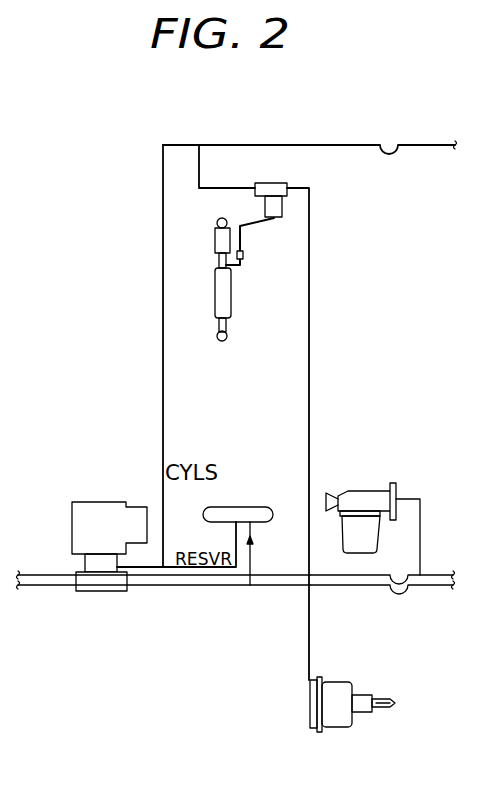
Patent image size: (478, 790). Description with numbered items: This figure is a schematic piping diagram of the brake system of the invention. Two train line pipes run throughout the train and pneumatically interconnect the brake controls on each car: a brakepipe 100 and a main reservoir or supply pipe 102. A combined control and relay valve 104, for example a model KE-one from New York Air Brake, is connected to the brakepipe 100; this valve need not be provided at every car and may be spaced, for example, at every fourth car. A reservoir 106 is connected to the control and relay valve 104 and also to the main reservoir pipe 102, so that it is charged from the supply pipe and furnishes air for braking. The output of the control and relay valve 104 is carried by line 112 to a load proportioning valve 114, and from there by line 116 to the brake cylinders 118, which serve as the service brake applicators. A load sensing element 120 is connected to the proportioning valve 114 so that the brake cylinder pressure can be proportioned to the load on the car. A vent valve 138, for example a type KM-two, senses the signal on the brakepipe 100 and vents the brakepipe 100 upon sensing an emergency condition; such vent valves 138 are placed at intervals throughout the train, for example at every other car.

The brakepipe 100 is at (435, 574).
The main reservoir or supply pipe 102 is at (340, 586).
The combined control and relay valve 104 is at (90, 518).
The reservoir 106 is at (245, 512).
The line 112 is at (297, 144).
The load proportioning valve 114 is at (272, 183).
The line 116 is at (310, 372).
The brake cylinders 118 is at (343, 681).
The load sensing element 120 is at (228, 302).
The vent valve 138 is at (368, 490).